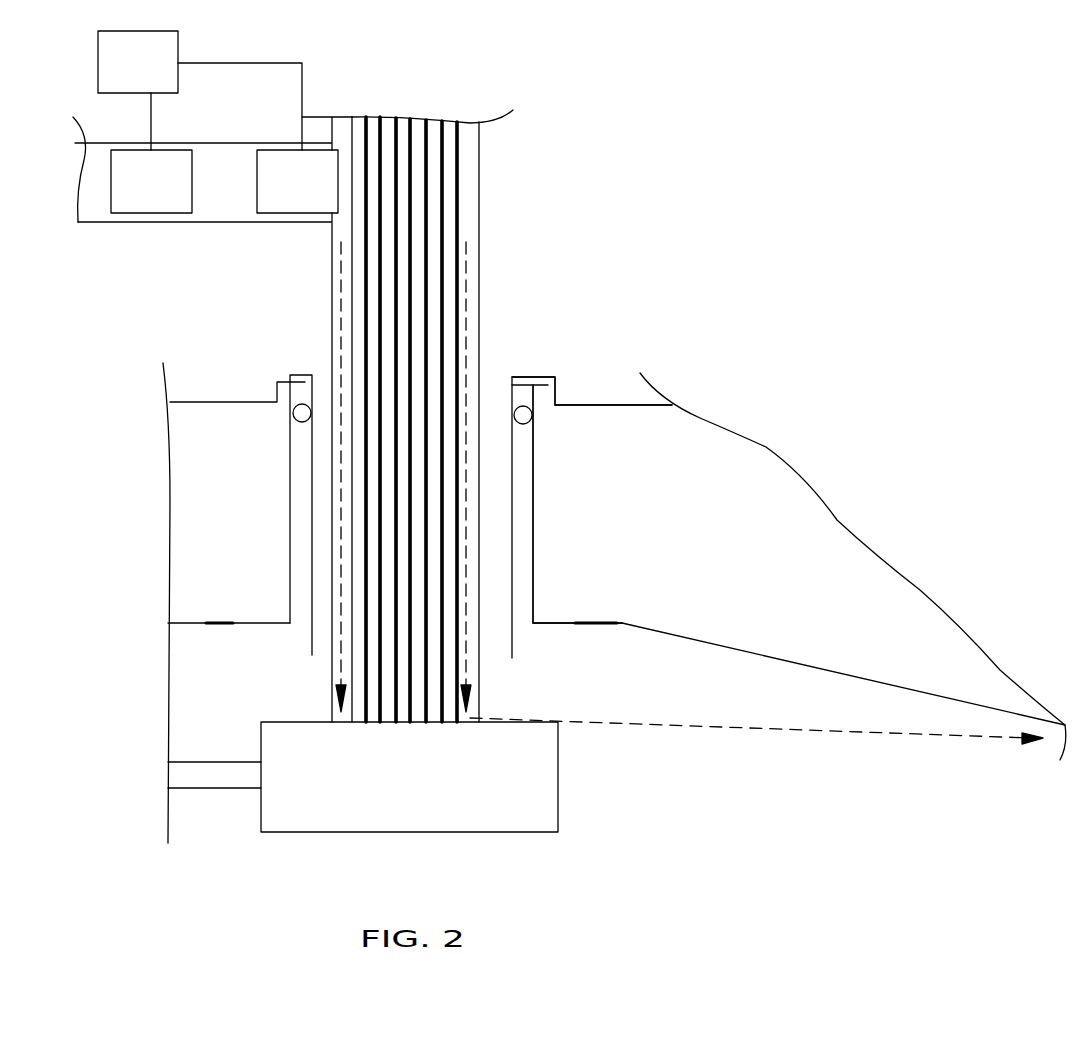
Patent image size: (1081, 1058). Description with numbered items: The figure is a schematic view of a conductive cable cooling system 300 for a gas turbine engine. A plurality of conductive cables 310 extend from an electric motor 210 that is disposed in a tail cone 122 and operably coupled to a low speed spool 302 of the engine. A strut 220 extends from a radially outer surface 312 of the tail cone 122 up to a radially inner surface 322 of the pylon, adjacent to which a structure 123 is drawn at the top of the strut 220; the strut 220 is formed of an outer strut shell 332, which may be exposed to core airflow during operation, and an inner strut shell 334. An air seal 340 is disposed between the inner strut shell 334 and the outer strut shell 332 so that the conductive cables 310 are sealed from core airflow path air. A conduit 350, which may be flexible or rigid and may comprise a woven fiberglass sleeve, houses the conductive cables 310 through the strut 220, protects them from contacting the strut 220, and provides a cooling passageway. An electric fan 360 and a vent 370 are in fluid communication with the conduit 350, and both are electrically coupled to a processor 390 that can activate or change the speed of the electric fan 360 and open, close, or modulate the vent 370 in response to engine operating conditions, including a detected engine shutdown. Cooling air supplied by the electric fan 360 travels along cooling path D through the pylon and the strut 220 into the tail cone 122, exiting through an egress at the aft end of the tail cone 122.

The conductive cable cooling system 300 is at (735, 198).
The processor 390 is at (200, 90).
The vent 370 is at (151, 181).
The electric fan 360 is at (297, 181).
The conduit 350 is at (478, 268).
The conductive cables 310 is at (443, 304).
The air seal 340 is at (297, 412).
The strut 220 is at (555, 517).
The radially inner surface 322 is at (535, 385).
The casing wall 123 is at (567, 405).
The outer strut shell 332 is at (535, 500).
The inner strut shell 334 is at (513, 595).
The radially outer surface 312 is at (655, 632).
The tail cone 122 is at (815, 667).
The electric motor 210 is at (409, 777).
The low speed spool 302 is at (178, 772).
The cooling path D is at (466, 408).